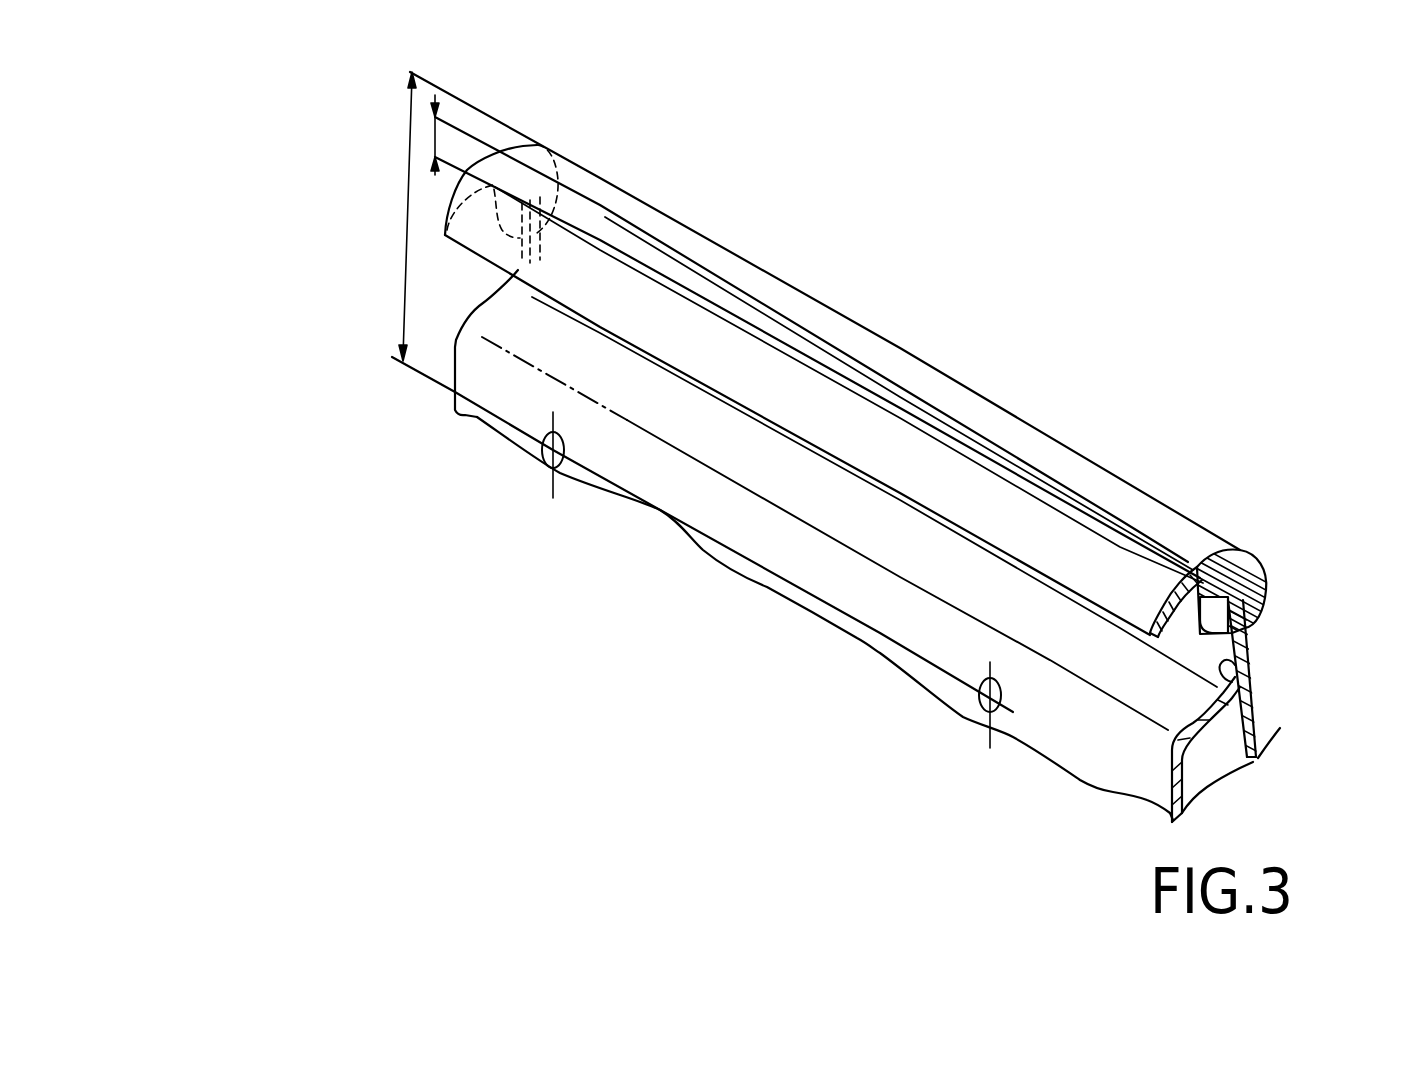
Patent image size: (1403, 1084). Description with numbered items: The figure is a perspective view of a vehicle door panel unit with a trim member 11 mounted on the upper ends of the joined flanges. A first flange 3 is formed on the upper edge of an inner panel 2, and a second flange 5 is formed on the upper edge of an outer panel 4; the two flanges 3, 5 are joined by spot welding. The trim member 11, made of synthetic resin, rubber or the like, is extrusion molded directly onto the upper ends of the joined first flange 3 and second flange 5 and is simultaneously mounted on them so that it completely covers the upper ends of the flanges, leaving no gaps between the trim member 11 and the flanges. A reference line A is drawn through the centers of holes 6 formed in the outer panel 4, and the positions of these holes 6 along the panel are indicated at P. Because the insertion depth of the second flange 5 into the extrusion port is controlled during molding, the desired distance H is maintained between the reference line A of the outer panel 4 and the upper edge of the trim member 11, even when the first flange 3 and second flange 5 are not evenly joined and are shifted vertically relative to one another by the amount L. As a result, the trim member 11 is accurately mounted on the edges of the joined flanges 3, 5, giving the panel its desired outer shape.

The trim member 11 is at (1192, 518).
The first flange 3 is at (1245, 640).
The second flange 5 is at (1235, 682).
The inner panel 2 is at (1250, 745).
The outer panel 4 is at (1168, 770).
The holes 6 is at (541, 458).
The hole pitch position P is at (565, 467).
The reference line A is at (781, 592).
The desired distance H is at (408, 203).
The vertical shift amount L is at (436, 131).